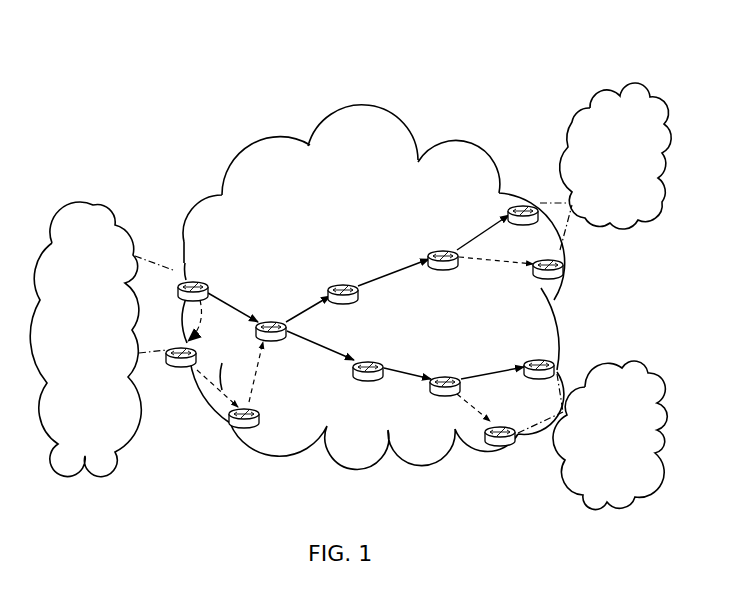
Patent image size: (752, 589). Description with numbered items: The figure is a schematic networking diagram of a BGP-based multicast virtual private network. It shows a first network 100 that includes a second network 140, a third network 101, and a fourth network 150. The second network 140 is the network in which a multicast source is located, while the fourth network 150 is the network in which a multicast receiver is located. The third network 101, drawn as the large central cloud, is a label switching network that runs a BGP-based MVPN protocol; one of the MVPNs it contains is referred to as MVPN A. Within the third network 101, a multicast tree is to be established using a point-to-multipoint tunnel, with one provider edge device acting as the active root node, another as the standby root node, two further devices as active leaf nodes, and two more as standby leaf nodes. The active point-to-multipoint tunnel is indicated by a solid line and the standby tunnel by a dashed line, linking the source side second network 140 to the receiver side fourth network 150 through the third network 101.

The first network 100 is at (50, 106).
The third network 101 is at (363, 102).
The second network 140 is at (82, 220).
The fourth network 150 is at (620, 95).